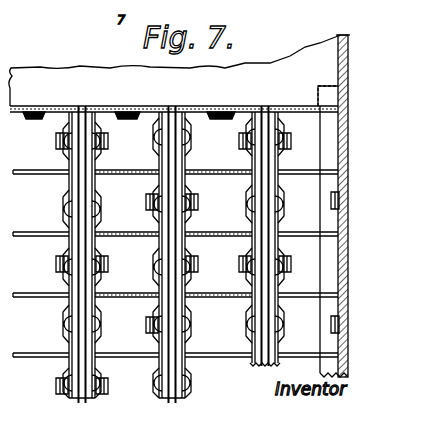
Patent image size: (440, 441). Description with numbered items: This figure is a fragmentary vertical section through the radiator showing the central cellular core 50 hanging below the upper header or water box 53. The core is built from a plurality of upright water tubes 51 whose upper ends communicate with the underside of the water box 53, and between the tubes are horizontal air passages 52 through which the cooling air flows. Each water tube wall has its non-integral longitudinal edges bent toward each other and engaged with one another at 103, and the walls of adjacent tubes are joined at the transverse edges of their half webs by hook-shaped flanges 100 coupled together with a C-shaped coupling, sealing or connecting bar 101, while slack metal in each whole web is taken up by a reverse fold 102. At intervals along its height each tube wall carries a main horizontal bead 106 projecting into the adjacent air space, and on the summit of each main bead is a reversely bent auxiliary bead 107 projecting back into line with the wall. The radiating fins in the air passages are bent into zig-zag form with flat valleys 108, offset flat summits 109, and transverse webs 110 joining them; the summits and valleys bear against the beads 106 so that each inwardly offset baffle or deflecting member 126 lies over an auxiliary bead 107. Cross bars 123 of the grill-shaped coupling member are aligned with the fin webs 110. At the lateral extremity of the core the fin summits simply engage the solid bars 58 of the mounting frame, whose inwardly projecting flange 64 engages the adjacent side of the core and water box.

The central cellular core 50 is at (218, 369).
The upright water tubes 51 is at (78, 398).
The horizontal air passages 52 is at (173, 233).
The upper header or water box 53 is at (173, 71).
The solid bars 58 is at (372, 68).
The inwardly projecting flange 64 is at (328, 270).
The hook-shaped flange 100 is at (45, 120).
The coupling, sealing or connecting bar 101 is at (40, 108).
The reversely folded part of whole web 102 is at (128, 107).
The engaged longitudinal edges of water tube walls 103 is at (263, 110).
The main horizontal bead 106 is at (67, 154).
The auxiliary bead 107 is at (58, 143).
The flat valleys 108 is at (282, 121).
The flat summits 109 is at (338, 178).
The transverse webs 110 is at (318, 172).
The transverse webs or cross bars 123 is at (34, 370).
The baffle or deflecting member 126 is at (108, 143).